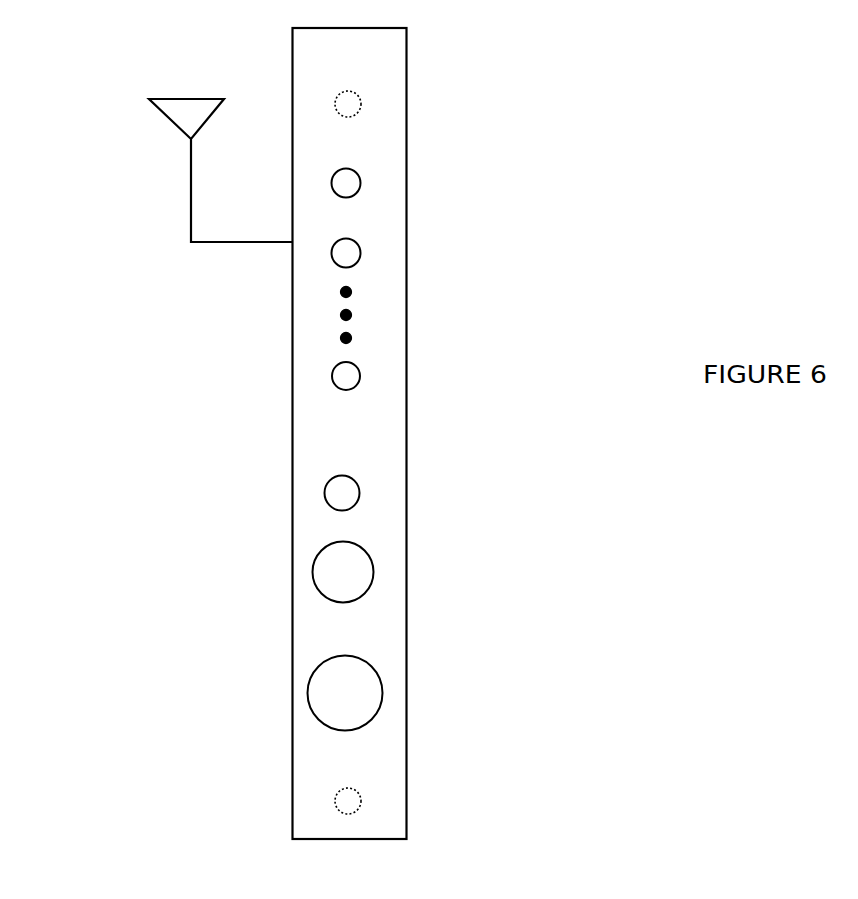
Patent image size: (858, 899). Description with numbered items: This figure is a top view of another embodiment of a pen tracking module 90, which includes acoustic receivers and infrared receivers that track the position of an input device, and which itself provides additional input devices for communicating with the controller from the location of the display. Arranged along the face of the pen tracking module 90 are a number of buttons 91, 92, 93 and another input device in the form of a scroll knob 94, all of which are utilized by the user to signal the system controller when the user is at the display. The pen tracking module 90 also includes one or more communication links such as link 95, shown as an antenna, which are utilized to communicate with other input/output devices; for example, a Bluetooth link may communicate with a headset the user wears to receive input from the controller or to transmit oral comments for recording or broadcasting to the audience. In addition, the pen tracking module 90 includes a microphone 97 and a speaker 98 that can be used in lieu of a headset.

The pen tracking module 90 is at (404, 48).
The button 91 is at (360, 183).
The button 92 is at (360, 253).
The button 93 is at (359, 376).
The scroll knob 94 is at (367, 693).
The communication link 95 is at (175, 99).
The microphone 97 is at (350, 487).
The speaker 98 is at (358, 565).